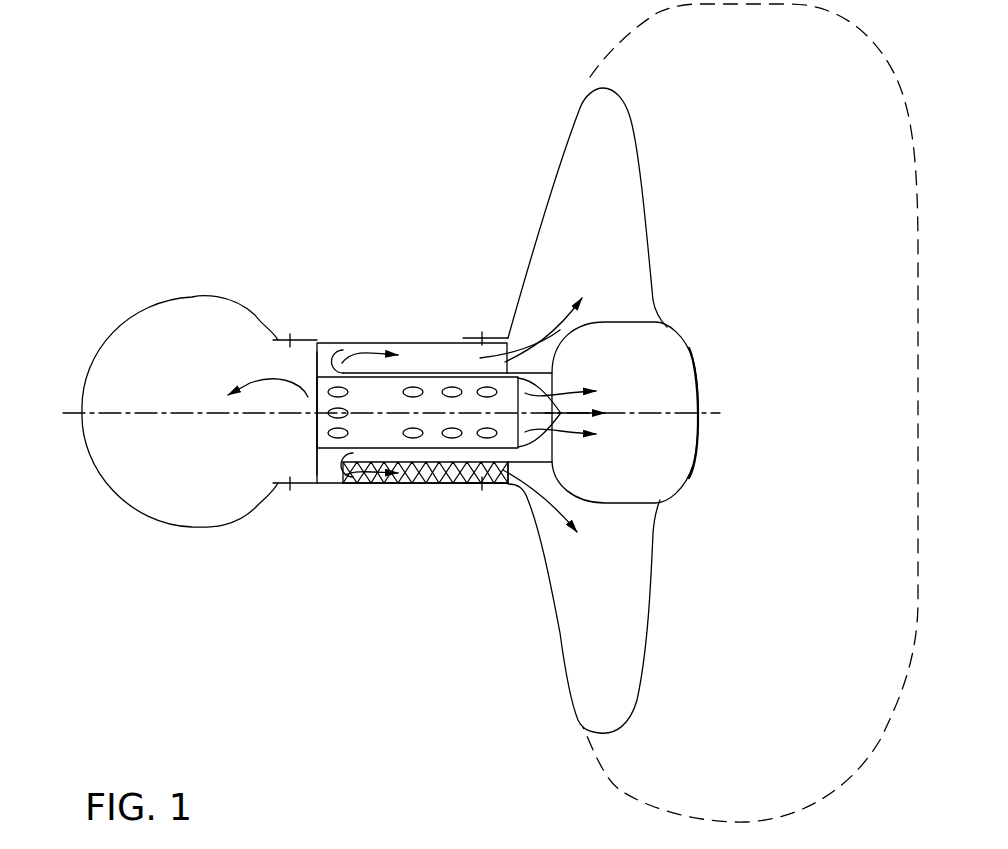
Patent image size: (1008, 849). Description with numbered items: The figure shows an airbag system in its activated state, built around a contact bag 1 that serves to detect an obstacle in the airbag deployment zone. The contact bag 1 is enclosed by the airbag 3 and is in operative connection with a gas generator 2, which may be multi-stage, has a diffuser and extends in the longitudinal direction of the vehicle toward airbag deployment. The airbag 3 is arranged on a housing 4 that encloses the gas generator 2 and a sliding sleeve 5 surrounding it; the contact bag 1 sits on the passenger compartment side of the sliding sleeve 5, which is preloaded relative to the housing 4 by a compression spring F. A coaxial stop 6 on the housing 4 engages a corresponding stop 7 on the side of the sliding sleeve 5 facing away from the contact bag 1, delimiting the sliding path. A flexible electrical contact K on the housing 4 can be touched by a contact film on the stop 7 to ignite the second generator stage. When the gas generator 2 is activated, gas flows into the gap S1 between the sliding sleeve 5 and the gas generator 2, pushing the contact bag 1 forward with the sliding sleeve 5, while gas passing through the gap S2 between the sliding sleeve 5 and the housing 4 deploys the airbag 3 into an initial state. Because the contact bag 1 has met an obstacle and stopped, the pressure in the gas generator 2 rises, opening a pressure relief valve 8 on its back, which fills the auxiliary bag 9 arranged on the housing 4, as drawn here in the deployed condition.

The contact bag 1 is at (620, 322).
The gas generator 2 is at (373, 423).
The airbag 3 is at (580, 103).
The housing 4 is at (327, 343).
The sliding sleeve 5 is at (457, 372).
The stop 6 is at (508, 353).
The stop 7 is at (342, 363).
The pressure relief valve 8 is at (305, 413).
The auxiliary bag 9 is at (123, 510).
The gap S1 is at (368, 453).
The gap S2 is at (365, 347).
The flexible electrical contact K is at (417, 352).
The compression spring F is at (443, 473).